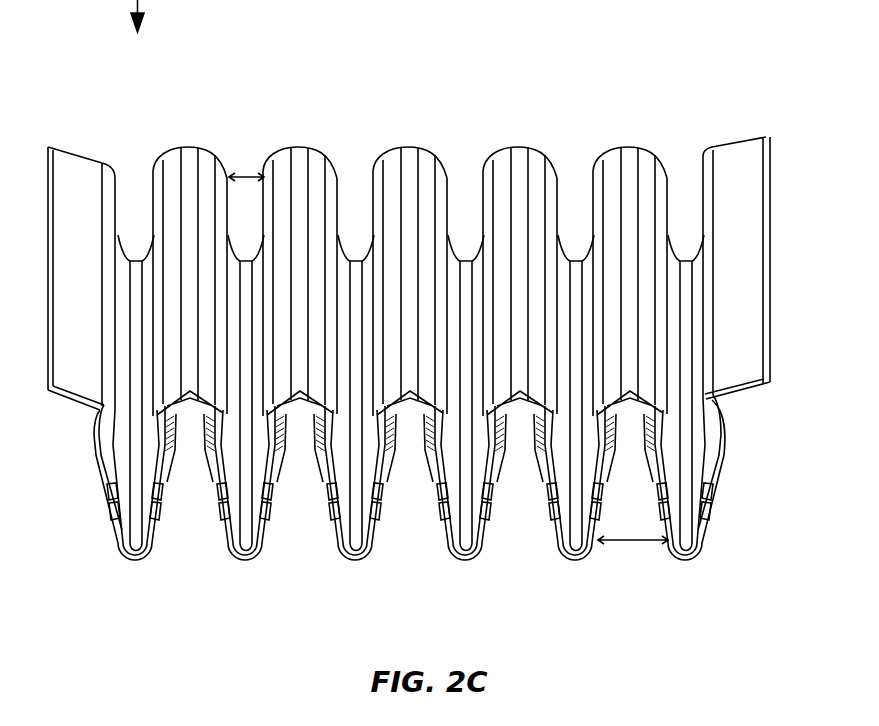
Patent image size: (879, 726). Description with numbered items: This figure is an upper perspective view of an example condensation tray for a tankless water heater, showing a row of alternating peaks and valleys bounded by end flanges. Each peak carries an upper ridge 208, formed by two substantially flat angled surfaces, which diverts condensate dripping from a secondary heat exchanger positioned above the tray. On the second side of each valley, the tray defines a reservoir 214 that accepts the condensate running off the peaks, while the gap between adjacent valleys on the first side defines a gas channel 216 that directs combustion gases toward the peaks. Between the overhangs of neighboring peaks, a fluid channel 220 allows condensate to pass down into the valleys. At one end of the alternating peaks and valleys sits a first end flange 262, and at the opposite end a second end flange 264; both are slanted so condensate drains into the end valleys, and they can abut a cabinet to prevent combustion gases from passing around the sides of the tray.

The upper ridge 208 is at (537, 143).
The reservoir 214 is at (137, 521).
The gas channel 216 is at (637, 543).
The fluid channel 220 is at (247, 172).
The first end flange 262 is at (67, 148).
The second end flange 264 is at (768, 138).